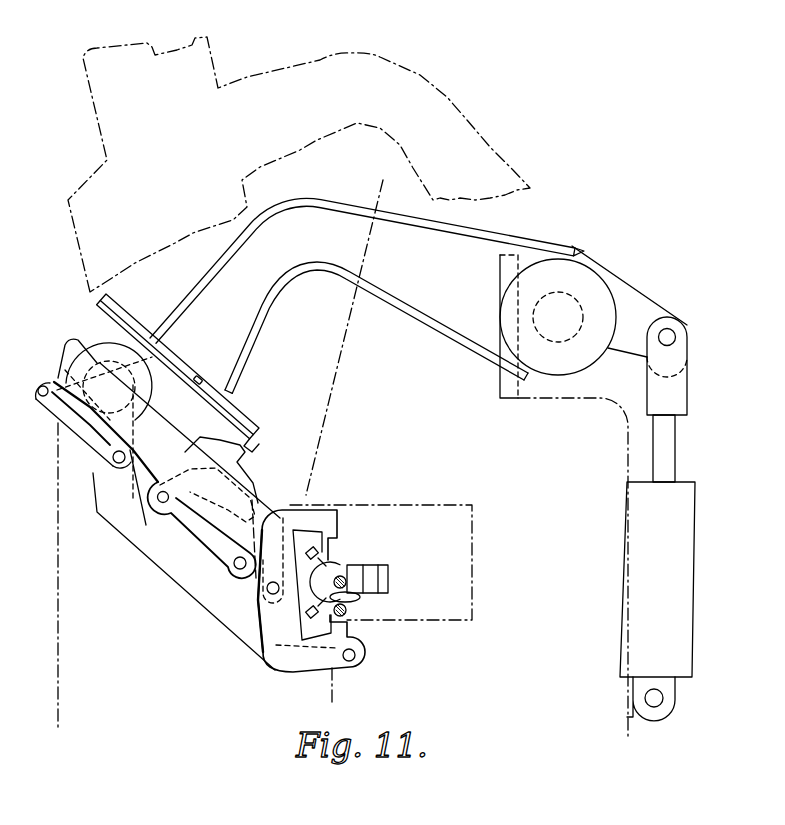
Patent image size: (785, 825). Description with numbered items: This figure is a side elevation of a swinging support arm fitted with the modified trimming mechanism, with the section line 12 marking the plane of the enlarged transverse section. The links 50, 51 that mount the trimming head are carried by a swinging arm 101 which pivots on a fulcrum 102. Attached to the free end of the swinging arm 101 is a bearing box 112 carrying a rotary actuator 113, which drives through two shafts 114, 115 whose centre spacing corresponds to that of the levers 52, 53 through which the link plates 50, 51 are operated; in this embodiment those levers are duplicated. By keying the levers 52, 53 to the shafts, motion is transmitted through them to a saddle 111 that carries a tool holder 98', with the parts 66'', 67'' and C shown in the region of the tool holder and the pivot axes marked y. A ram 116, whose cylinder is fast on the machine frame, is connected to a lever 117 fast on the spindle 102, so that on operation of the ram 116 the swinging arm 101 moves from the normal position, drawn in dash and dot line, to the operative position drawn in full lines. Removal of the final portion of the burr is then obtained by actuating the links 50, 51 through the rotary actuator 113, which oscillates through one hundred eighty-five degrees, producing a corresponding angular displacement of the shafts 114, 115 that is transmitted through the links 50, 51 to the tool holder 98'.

The section line 12 is at (355, 432).
The swinging arm 101 is at (540, 229).
The fulcrum 102 is at (563, 306).
The lever 117 is at (633, 342).
The ram 116 is at (646, 472).
The shaft 114 is at (167, 405).
The rotary actuator 113 is at (172, 336).
The link 50 is at (230, 413).
The bearing box 112 is at (255, 433).
The lever 52 is at (88, 452).
The shaft 115 is at (255, 481).
The lever 53 is at (198, 534).
The link 51 is at (180, 570).
The tool holder 98' is at (350, 538).
The clamp block 66'' is at (377, 557).
The clamp bolt 67'' is at (359, 626).
The saddle 111 is at (276, 614).
The pivot axis y is at (102, 358).
The cable C is at (365, 605).